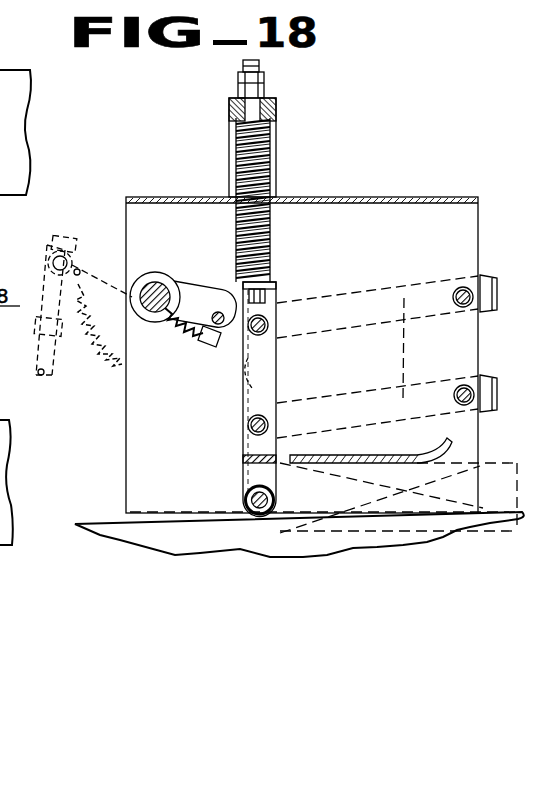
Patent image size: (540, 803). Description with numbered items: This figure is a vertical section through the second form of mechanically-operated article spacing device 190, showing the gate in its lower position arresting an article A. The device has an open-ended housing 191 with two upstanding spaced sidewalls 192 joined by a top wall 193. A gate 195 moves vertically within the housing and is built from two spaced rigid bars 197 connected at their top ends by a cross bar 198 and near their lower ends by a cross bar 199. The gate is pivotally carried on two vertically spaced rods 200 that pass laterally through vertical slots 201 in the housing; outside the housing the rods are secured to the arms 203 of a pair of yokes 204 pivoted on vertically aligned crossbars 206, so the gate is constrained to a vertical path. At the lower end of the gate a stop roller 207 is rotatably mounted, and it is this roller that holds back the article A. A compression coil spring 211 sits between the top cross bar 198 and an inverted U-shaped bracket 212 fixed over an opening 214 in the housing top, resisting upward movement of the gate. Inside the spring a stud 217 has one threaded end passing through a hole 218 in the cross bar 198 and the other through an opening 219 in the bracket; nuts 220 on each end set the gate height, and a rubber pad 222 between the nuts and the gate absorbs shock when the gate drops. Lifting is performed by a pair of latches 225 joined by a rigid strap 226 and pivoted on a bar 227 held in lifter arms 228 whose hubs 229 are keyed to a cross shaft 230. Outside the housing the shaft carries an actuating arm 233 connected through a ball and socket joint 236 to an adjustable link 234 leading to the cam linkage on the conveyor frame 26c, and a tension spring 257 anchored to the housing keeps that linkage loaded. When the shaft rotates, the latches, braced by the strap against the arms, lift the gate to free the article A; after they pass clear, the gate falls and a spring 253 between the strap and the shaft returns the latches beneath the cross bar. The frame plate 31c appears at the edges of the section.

The mechanically-operated article spacing device 190 is at (452, 164).
The housing 191 is at (386, 197).
The sidewalls 192 is at (400, 248).
The top wall 193 is at (160, 200).
The gate 195 is at (243, 378).
The rigid bars 197 is at (262, 352).
The cross bar 198 is at (280, 290).
The cross bar 199 is at (243, 461).
The rods 200 is at (268, 323).
The slots 201 is at (282, 378).
The arms 203 is at (377, 357).
The yokes 204 is at (497, 303).
The crossbars 206 is at (461, 385).
The stop roller 207 is at (274, 494).
The compression coil spring 211 is at (272, 143).
The inverted U-shaped bracket 212 is at (231, 153).
The opening 214 is at (226, 203).
The stud 217 is at (253, 63).
The hole 218 is at (248, 284).
The opening 219 is at (230, 100).
The nuts 220 is at (262, 95).
The rubber pad 222 is at (229, 112).
The latches 225 is at (246, 296).
The rigid strap 226 is at (210, 347).
The bar 227 is at (208, 309).
The lifter arms 228 is at (180, 276).
The hubs 229 is at (140, 283).
The cross shaft 230 is at (160, 312).
The actuating arm 233 is at (102, 279).
The adjustable link 234 is at (57, 357).
The ball and socket joint 236 is at (65, 246).
The spring 253 is at (170, 335).
The tension spring 257 is at (154, 373).
The article A is at (470, 460).
The frame plate 31c is at (0, 98).
The conveyor frame 26c is at (265, 547).